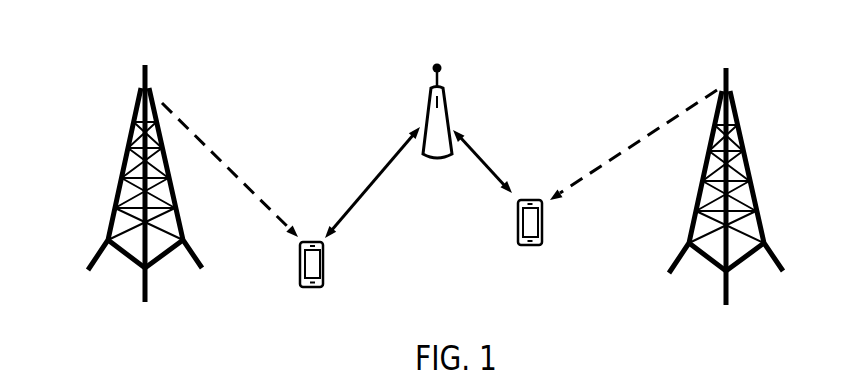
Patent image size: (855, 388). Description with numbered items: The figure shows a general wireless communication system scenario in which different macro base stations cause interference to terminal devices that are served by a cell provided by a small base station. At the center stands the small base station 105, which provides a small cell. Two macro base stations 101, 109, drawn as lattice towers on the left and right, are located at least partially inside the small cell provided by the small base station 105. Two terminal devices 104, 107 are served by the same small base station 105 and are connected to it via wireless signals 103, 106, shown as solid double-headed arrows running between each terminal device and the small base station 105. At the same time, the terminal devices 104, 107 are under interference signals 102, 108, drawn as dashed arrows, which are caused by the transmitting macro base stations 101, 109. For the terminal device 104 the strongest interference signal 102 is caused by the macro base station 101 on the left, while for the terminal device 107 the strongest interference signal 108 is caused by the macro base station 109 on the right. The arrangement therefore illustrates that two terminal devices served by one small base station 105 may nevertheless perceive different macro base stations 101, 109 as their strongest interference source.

The macro base station 101 is at (128, 165).
The interference signal 102 is at (212, 150).
The wireless signal 103 is at (372, 178).
The terminal device 104 is at (325, 267).
The small base station 105 is at (441, 84).
The wireless signal 106 is at (480, 162).
The terminal device 107 is at (543, 222).
The interference signal 108 is at (655, 128).
The macro base station 109 is at (742, 163).